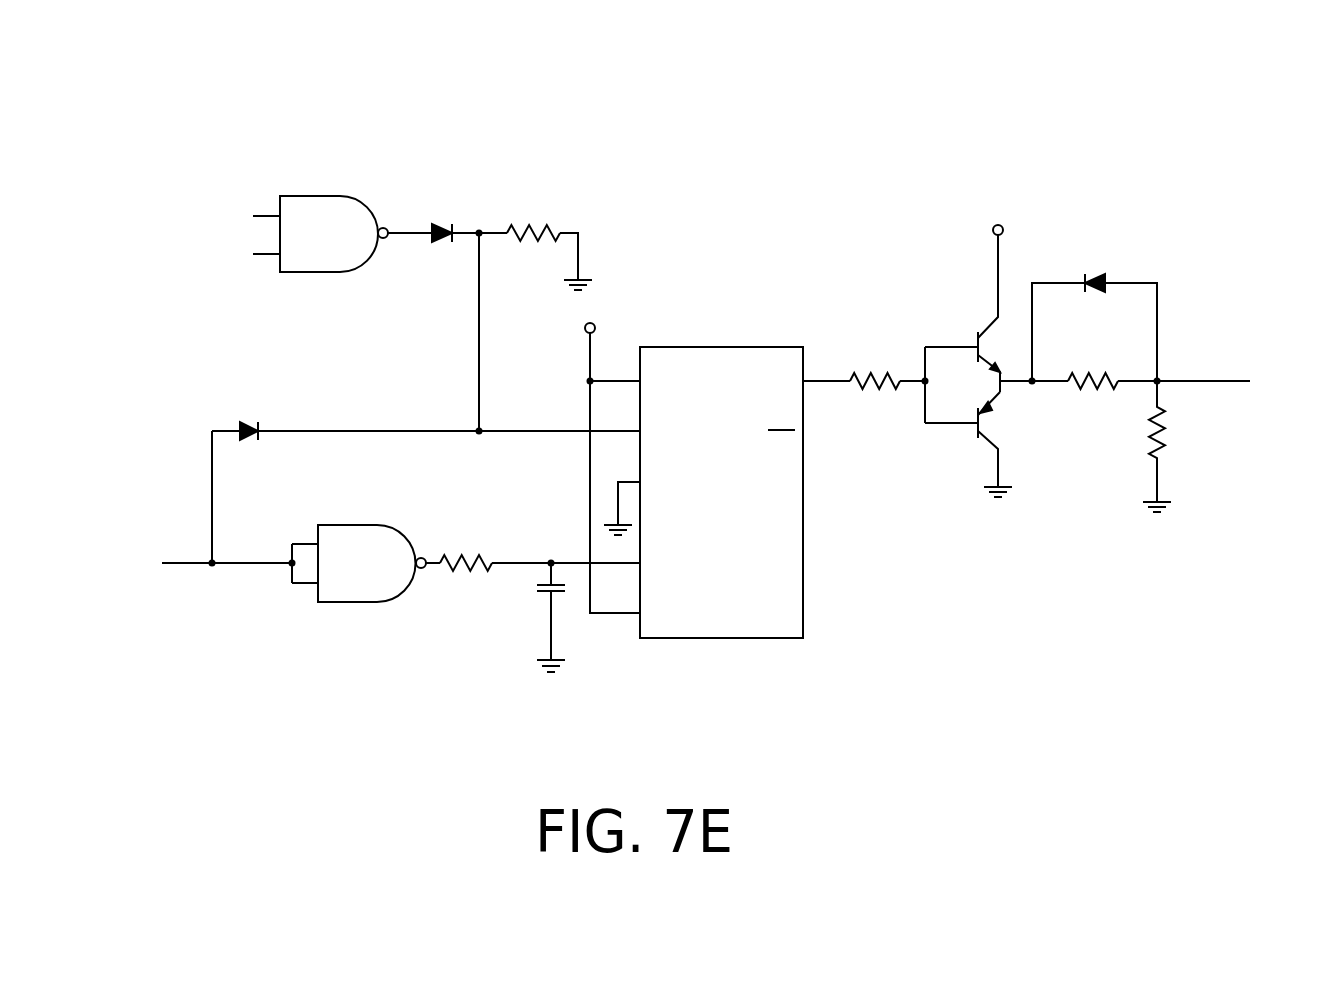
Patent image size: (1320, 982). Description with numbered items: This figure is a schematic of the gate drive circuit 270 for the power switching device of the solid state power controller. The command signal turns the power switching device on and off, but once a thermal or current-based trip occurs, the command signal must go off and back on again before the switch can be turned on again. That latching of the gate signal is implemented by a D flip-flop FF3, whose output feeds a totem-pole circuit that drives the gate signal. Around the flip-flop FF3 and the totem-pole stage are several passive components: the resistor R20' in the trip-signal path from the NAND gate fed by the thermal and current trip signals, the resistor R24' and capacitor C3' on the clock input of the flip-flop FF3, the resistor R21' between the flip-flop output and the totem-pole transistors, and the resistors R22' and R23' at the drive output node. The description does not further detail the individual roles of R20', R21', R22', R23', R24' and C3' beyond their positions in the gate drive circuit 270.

The gate drive circuit 270 is at (704, 357).
The resistor R20' is at (533, 215).
The resistor R21' is at (875, 363).
The resistor R22' is at (1093, 364).
The resistor R23' is at (1183, 441).
The resistor R24' is at (466, 546).
The capacitor C3' is at (530, 611).
The D flip-flop FF3 is at (721, 476).